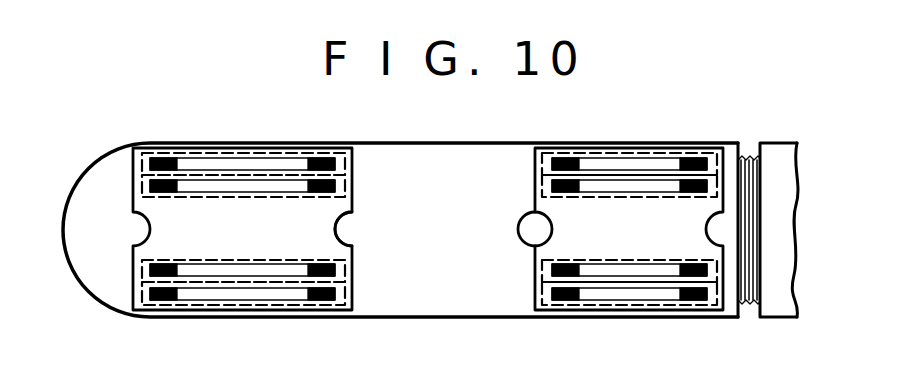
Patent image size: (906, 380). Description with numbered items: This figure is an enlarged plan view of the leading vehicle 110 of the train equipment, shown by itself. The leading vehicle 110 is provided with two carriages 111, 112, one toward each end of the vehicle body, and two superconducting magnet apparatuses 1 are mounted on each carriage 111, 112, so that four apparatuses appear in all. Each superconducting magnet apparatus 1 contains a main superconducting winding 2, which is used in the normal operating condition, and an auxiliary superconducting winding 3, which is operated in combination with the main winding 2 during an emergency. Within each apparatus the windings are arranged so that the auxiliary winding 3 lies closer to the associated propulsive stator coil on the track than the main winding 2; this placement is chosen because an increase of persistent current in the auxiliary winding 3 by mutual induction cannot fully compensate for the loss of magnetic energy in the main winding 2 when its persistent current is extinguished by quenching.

The superconducting magnet apparatus 1 is at (141, 167).
The main superconducting winding 2 is at (168, 194).
The auxiliary superconducting winding 3 is at (159, 162).
The leading vehicle 110 is at (474, 197).
The carriage 111 is at (339, 222).
The carriage 112 is at (552, 230).